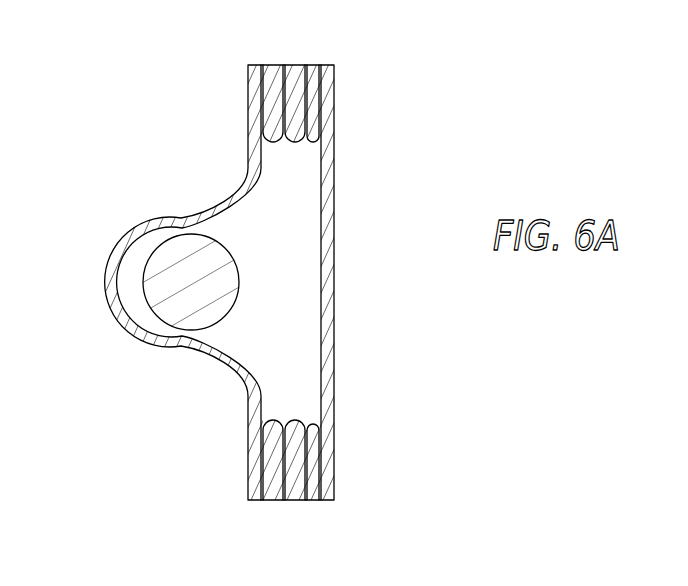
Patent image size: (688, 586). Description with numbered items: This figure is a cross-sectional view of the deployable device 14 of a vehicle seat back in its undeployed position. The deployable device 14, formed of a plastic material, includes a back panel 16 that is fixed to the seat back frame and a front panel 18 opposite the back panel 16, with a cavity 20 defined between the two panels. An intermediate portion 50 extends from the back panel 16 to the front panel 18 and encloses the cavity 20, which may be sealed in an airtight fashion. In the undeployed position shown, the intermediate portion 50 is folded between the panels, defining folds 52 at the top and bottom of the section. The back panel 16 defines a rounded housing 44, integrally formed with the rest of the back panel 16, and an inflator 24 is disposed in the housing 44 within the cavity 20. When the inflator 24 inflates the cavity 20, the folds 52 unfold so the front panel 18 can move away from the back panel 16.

The deployable device 14 is at (444, 103).
The back panel 16 is at (248, 445).
The front panel 18 is at (335, 357).
The cavity 20 is at (292, 282).
The inflator 24 is at (170, 300).
The housing 44 is at (128, 262).
The intermediate portion 50 is at (285, 63).
The folds 52 is at (311, 143).